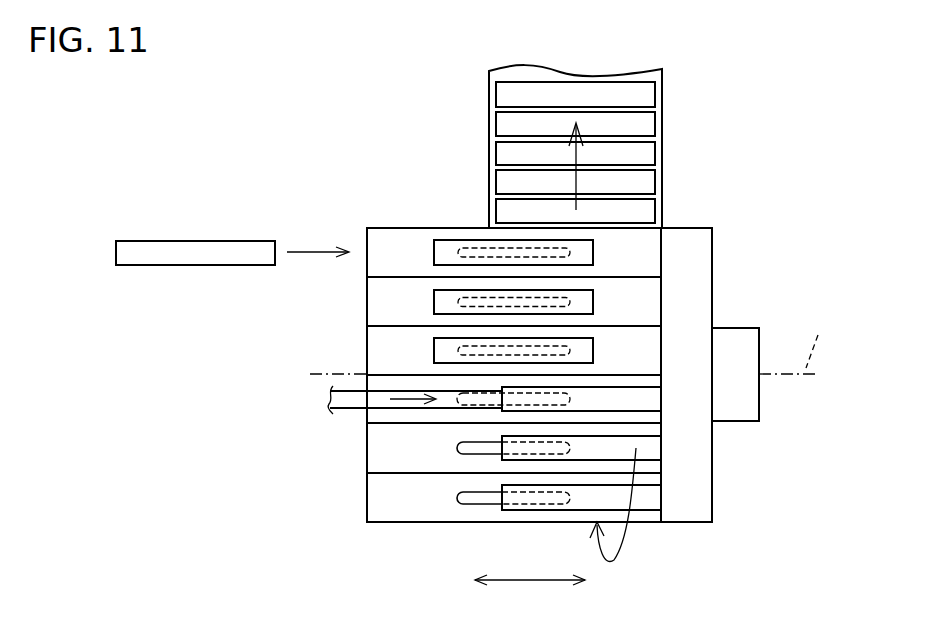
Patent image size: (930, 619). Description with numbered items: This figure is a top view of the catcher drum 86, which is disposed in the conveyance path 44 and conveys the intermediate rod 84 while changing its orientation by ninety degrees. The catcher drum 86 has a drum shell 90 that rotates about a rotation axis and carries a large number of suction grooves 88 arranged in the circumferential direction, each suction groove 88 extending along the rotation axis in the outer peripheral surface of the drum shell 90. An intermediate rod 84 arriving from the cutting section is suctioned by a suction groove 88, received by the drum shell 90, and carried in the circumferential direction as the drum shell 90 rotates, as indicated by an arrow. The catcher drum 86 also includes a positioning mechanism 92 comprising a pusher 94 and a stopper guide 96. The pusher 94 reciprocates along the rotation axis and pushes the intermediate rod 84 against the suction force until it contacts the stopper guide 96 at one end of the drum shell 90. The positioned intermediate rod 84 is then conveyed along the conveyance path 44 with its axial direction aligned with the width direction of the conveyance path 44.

The conveyance path 44 is at (662, 105).
The intermediate rod 84 is at (158, 240).
The catcher drum 86 is at (753, 250).
The suction groove 88 is at (476, 250).
The drum shell 90 is at (442, 523).
The positioning mechanism 92 is at (365, 431).
The pusher 94 is at (414, 425).
The stopper guide 96 is at (681, 498).